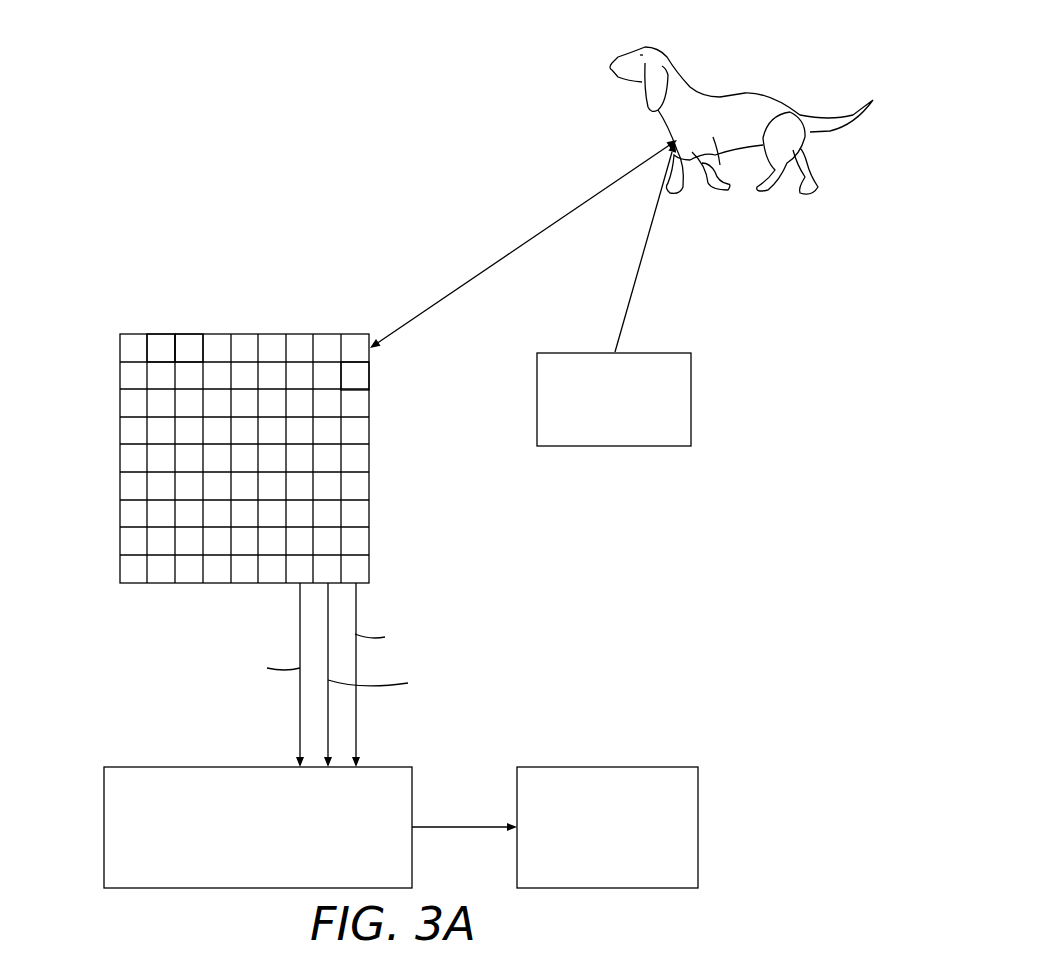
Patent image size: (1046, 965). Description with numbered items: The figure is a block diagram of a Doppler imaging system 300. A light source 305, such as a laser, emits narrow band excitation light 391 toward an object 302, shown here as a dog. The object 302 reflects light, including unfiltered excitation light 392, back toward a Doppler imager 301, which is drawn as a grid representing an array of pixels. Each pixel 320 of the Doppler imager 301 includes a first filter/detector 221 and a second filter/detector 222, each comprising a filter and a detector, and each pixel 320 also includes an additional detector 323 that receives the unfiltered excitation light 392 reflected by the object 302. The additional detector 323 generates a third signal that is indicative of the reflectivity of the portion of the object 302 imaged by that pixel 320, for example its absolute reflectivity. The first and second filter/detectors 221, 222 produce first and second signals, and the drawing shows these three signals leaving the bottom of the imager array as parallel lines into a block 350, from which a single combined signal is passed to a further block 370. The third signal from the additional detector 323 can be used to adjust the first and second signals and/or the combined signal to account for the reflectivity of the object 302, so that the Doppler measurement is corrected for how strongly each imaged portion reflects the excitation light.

The Doppler imaging system 300 is at (248, 212).
The Doppler imager 301 is at (140, 300).
The object 302 is at (739, 77).
The light source 305 is at (691, 399).
The pixel 320 is at (165, 334).
The first filter/detector 221 is at (128, 349).
The second filter/detector 222 is at (162, 348).
The additional detector 323 is at (190, 348).
The readout circuit 350 is at (178, 767).
The processor 370 is at (623, 767).
The excitation light 391 is at (637, 282).
The unfiltered excitation light 392 is at (543, 232).